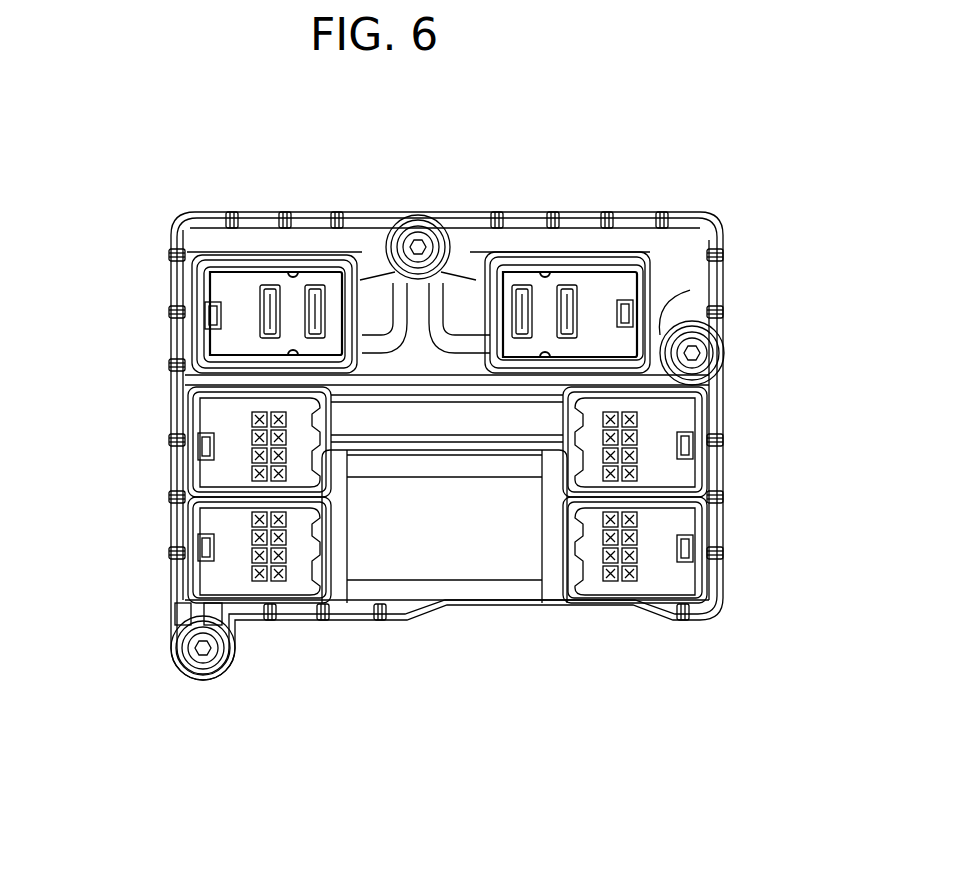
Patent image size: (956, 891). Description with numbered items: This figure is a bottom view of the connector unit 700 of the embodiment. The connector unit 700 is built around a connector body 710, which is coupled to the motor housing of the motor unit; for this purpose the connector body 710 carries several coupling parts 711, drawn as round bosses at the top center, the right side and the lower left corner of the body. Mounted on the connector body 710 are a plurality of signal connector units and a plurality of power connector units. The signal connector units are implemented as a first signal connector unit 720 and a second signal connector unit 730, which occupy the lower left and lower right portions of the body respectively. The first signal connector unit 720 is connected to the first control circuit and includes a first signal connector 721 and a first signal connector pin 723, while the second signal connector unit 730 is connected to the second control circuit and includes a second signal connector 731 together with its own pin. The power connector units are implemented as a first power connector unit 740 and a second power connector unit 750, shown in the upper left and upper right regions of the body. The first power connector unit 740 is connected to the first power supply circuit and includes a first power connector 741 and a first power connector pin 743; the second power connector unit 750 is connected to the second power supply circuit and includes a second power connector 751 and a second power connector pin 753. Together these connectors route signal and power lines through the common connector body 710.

The connector unit 700 is at (110, 112).
The connector body 710 is at (435, 363).
The coupling parts 711 is at (418, 233).
The first signal connector unit 720 is at (403, 495).
The first signal connector 721 is at (200, 532).
The first signal connector pin 723 is at (250, 430).
The second signal connector unit 730 is at (712, 495).
The second signal connector 731 is at (800, 436).
The first power connector unit 740 is at (183, 313).
The first power connector 741 is at (207, 328).
The first power connector pin 743 is at (262, 303).
The second power connector unit 750 is at (673, 288).
The second power connector 751 is at (583, 298).
The second power connector pin 753 is at (650, 262).